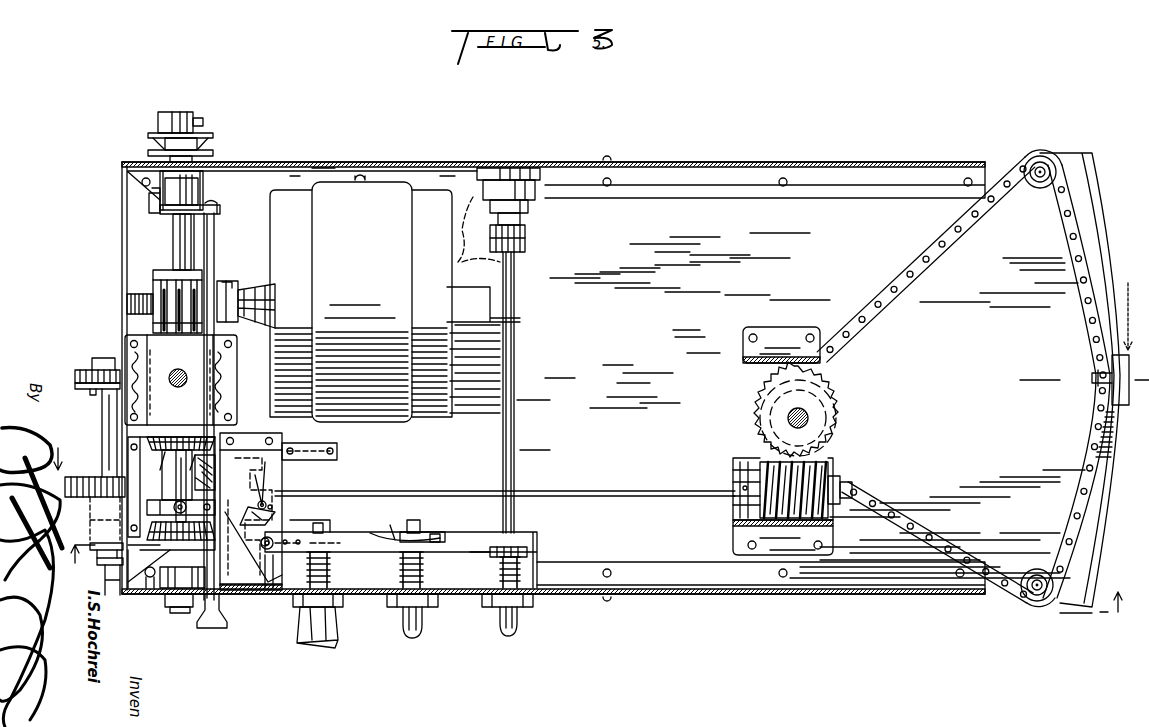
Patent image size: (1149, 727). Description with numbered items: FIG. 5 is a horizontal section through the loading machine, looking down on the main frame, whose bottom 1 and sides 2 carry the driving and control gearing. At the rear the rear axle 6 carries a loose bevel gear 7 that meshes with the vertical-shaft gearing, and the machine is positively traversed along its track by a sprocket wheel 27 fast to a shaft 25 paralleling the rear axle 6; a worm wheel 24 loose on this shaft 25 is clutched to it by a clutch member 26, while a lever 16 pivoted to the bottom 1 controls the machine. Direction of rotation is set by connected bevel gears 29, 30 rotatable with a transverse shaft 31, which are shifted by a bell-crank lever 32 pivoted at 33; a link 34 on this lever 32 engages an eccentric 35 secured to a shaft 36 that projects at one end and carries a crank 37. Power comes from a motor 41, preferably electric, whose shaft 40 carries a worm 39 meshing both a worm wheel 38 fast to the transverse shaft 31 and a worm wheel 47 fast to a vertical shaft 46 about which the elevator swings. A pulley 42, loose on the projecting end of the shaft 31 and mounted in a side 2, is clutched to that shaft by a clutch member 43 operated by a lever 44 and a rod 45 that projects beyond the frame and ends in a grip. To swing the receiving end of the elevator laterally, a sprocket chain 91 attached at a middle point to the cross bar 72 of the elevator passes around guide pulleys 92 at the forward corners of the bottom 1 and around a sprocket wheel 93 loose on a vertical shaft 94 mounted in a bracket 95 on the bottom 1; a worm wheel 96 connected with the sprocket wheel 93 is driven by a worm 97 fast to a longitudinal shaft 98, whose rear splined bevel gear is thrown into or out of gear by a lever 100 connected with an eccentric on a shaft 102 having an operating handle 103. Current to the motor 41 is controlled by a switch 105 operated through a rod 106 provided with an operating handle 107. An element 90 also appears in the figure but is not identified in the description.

The bottom 1 is at (690, 205).
The sides 2 is at (740, 165).
The rear axle 6 is at (596, 587).
The bevel gear 7 is at (592, 365).
The lever 16 is at (325, 638).
The worm wheel 24 is at (96, 478).
The shaft 25 is at (103, 407).
The clutch member 26 is at (100, 545).
The sprocket wheel 27 is at (80, 370).
The bevel gear 29 is at (185, 430).
The bevel gear 30 is at (118, 570).
The transverse shaft 31 is at (174, 236).
The lever 32 is at (270, 512).
The pivot 33 is at (258, 492).
The link 34 is at (360, 540).
The eccentric 35 is at (432, 545).
The shaft 36 is at (418, 530).
The crank 37 is at (410, 640).
The worm wheel 38 is at (128, 305).
The worm 39 is at (155, 272).
The shaft 40 is at (234, 285).
The motor 41 is at (395, 295).
The pulley 42 is at (150, 134).
The clutch member 43 is at (158, 188).
The lever 44 is at (152, 210).
The rod 45 is at (216, 240).
The vertical shaft 46 is at (178, 370).
The worm wheel 47 is at (125, 350).
The cross bar 72 is at (1120, 418).
The plate 90 is at (248, 440).
The sprocket chain 91 is at (930, 262).
The guide pulleys 92 is at (1040, 180).
The sprocket wheel 93 is at (840, 440).
The vertical shaft 94 is at (788, 415).
The bracket 95 is at (745, 522).
The worm wheel 96 is at (852, 402).
The worm 97 is at (830, 505).
The longitudinal shaft 98 is at (596, 497).
The lever 100 is at (263, 594).
The shaft 102 is at (340, 535).
The operating handle 103 is at (315, 640).
The switch 105 is at (522, 177).
The rod 106 is at (516, 360).
The operating handle 107 is at (520, 630).